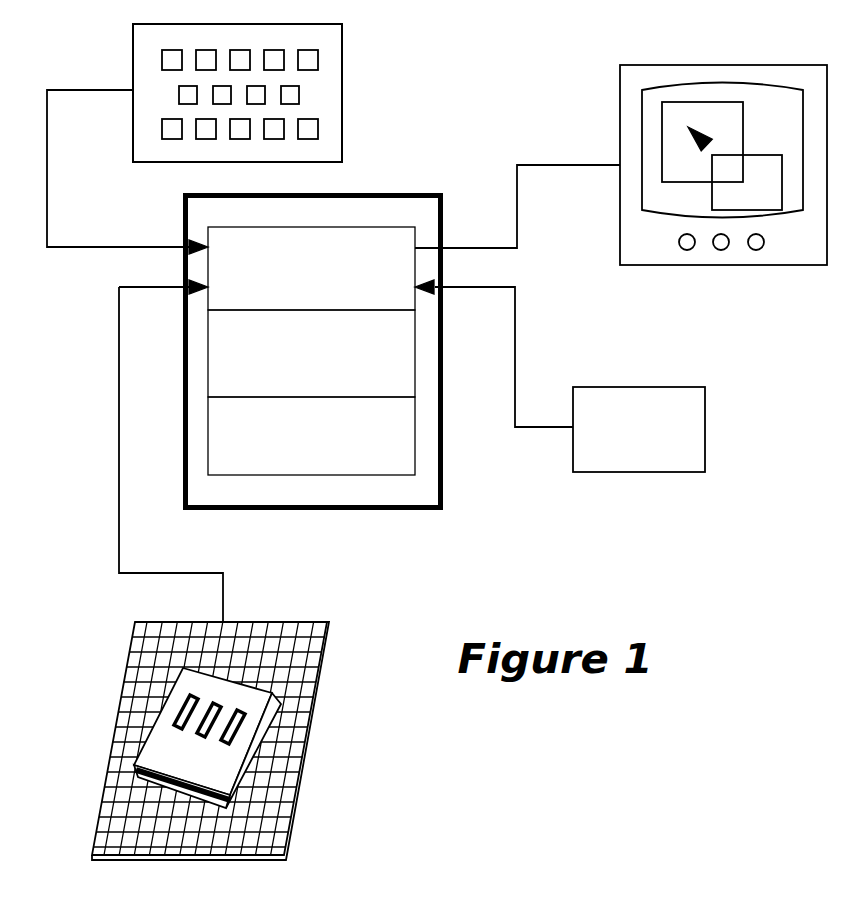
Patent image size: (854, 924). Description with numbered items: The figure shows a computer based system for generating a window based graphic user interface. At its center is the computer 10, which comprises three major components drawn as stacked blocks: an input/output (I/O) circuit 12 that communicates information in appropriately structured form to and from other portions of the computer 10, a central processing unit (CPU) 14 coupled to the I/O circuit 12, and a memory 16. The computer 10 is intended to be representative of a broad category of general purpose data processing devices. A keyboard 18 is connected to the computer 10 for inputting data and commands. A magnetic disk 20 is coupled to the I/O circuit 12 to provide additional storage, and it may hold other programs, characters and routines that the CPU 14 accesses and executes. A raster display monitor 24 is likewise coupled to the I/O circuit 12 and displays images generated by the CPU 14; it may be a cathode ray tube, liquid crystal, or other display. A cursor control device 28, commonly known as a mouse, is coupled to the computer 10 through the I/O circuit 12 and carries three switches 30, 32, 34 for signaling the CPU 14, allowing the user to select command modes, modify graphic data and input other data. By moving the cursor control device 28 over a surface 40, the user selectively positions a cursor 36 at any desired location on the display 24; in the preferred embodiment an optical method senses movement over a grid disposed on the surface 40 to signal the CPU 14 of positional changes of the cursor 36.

The computer 10 is at (449, 183).
The input/output (I/O) circuit 12 is at (350, 227).
The central processing unit (CPU) 14 is at (417, 338).
The memory 16 is at (417, 427).
The keyboard 18 is at (359, 57).
The magnetic disk 20 is at (639, 429).
The raster display monitor 24 is at (747, 282).
The cursor control device 28 is at (210, 696).
The switch 30 is at (187, 708).
The switch 32 is at (213, 702).
The switch 34 is at (240, 717).
The cursor 36 is at (712, 148).
The surface 40 is at (322, 780).